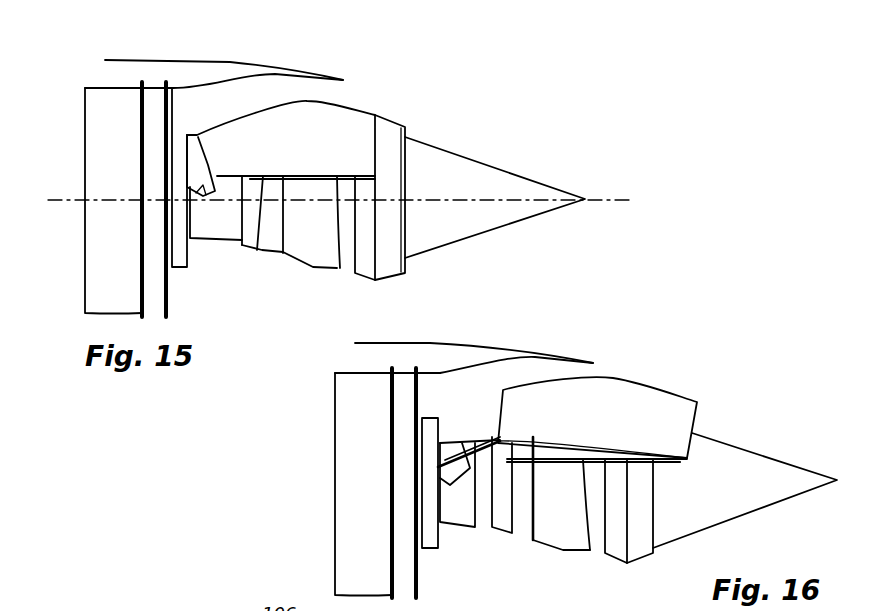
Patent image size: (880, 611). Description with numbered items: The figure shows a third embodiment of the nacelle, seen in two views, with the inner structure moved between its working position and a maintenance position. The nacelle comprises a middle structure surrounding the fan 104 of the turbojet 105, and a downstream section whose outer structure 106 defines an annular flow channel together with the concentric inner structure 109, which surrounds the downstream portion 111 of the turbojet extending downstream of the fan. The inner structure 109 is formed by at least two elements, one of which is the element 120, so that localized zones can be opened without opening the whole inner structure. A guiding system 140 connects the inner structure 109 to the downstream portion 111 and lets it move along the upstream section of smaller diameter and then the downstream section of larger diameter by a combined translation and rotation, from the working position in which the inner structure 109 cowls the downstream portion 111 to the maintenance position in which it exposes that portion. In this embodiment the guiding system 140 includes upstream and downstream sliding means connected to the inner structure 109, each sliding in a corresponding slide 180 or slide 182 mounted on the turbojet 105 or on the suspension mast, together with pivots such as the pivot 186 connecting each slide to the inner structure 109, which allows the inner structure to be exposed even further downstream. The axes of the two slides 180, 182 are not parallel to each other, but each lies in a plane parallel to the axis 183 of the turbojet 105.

In FIG. 15, the fan 104 is at (85, 108).
In FIG. 16, the fan 104 is at (335, 390).
In FIG. 15, the turbojet 105 is at (313, 272).
In FIG. 16, the turbojet 105 is at (562, 554).
In FIG. 15, the outer structure 106 is at (237, 60).
In FIG. 16, the outer structure 106 is at (487, 343).
In FIG. 15, the inner structure 109 is at (368, 110).
In FIG. 16, the inner structure 109 is at (680, 384).
In FIG. 15, the downstream portion of the turbojet 111 is at (212, 220).
In FIG. 15, the element of the inner structure 120 is at (336, 121).
In FIG. 16, the element of the inner structure 120 is at (630, 393).
In FIG. 15, the guiding system 140 is at (263, 182).
In FIG. 15, the slide 180 is at (202, 196).
In FIG. 16, the slide 180 is at (456, 470).
In FIG. 15, the slide 182 is at (338, 274).
In FIG. 16, the slide 182 is at (588, 565).
In FIG. 15, the axis of the turbojet 183 is at (598, 199).
In FIG. 16, the axis of the turbojet 183 is at (745, 490).
In FIG. 16, the pivot 186 is at (657, 462).